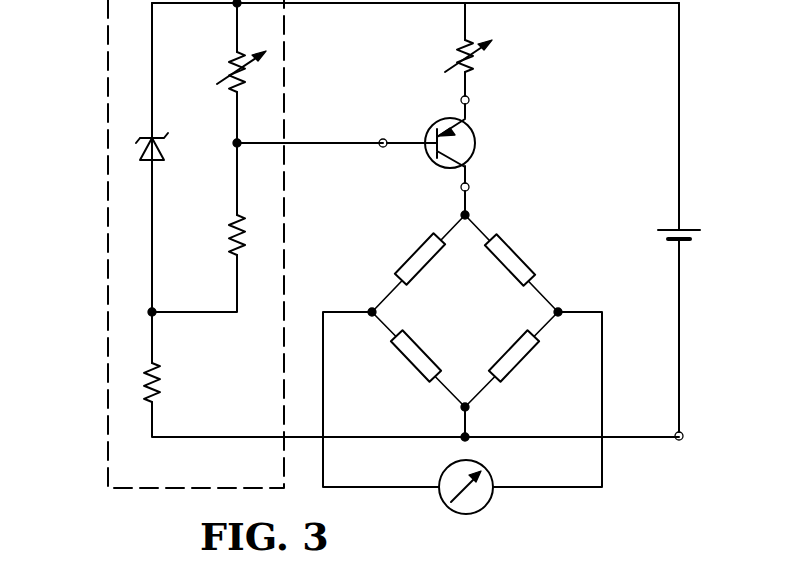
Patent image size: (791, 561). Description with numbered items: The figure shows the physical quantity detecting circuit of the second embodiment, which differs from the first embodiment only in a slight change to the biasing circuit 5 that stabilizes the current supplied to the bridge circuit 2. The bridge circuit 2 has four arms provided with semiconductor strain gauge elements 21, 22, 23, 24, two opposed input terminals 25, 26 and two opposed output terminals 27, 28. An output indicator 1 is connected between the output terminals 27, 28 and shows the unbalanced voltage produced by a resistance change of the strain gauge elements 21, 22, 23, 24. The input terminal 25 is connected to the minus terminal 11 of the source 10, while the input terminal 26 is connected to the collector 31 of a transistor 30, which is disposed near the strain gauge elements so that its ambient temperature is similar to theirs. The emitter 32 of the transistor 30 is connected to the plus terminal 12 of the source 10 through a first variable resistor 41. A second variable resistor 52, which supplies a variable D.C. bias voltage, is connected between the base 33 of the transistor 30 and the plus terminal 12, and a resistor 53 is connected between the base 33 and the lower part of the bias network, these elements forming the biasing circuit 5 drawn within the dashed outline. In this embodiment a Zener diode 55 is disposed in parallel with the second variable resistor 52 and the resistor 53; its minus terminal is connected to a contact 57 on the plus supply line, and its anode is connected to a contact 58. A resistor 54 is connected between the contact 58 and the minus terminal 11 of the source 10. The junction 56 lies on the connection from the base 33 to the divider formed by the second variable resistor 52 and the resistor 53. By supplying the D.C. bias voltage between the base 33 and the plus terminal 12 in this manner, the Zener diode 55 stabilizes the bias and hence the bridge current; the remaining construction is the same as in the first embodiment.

The output indicator 1 is at (490, 471).
The bridge circuit 2 is at (470, 316).
The biasing circuit 5 is at (104, 27).
The source 10 is at (686, 228).
The minus terminal 11 is at (684, 437).
The plus terminal 12 is at (680, 4).
The semiconductor strain gauge element 21 is at (410, 258).
The semiconductor strain gauge element 22 is at (405, 360).
The semiconductor strain gauge element 23 is at (525, 355).
The semiconductor strain gauge element 24 is at (522, 260).
The input terminal 25 is at (470, 408).
The input terminal 26 is at (461, 212).
The output terminal 27 is at (370, 310).
The output terminal 28 is at (560, 310).
The transistor 30 is at (477, 140).
The collector 31 is at (470, 187).
The emitter 32 is at (461, 100).
The base 33 is at (382, 140).
The first variable resistor 41 is at (478, 70).
The second variable resistor 52 is at (226, 70).
The resistor 53 is at (228, 228).
The resistor 54 is at (157, 366).
The Zener diode 55 is at (160, 150).
The node 56 is at (239, 147).
The contact 57 is at (235, 6).
The contact 58 is at (150, 311).